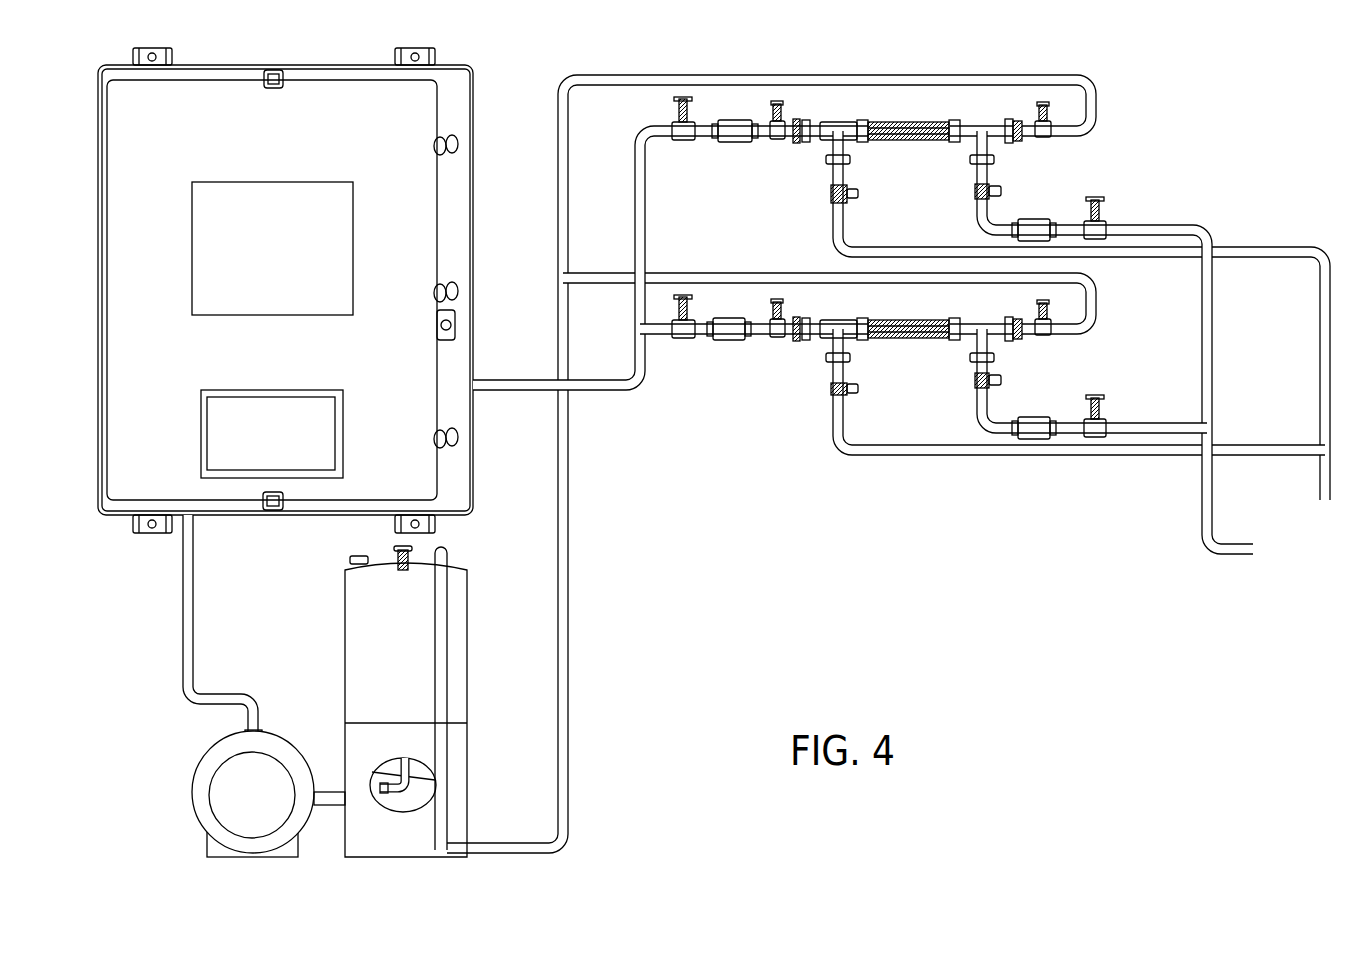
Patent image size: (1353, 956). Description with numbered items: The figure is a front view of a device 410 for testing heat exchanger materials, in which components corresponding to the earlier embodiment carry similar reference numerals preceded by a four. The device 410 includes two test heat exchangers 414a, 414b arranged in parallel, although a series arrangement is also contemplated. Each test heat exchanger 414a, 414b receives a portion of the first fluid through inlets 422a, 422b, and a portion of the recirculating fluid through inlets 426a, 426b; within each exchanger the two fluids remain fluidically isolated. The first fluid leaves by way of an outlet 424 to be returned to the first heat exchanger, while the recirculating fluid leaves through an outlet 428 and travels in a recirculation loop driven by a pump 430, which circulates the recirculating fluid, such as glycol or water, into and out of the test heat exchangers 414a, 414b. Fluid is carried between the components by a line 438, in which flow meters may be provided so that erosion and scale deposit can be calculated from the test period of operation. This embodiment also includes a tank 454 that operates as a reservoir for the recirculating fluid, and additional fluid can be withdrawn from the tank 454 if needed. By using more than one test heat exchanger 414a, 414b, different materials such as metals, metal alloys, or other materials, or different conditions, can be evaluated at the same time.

The device 410 is at (780, 523).
The test heat exchanger 414a is at (887, 143).
The test heat exchanger 414b is at (900, 320).
The inlet 422a is at (990, 172).
The inlet 422b is at (1003, 368).
The outlet 424 is at (830, 172).
The inlet 426a is at (1023, 138).
The inlet 426b is at (1023, 338).
The outlet 428 is at (778, 338).
The pump 430 is at (280, 737).
The line 438 is at (760, 80).
The tank 454 is at (463, 637).